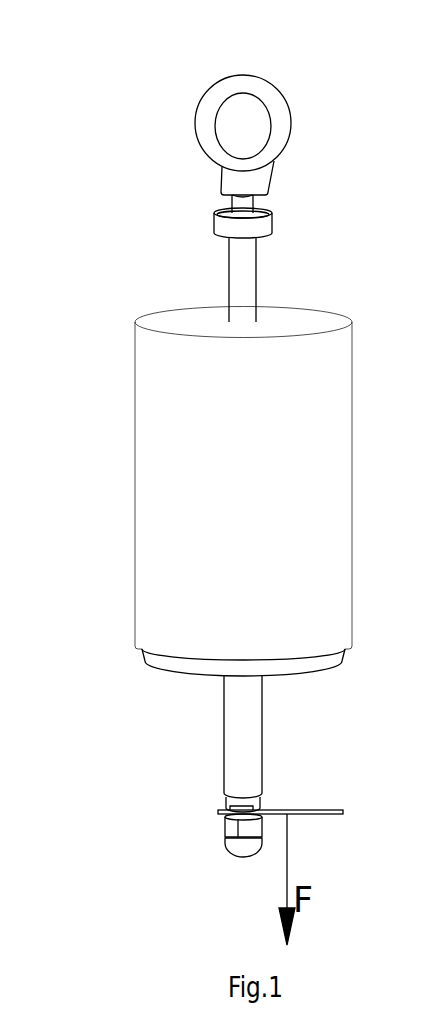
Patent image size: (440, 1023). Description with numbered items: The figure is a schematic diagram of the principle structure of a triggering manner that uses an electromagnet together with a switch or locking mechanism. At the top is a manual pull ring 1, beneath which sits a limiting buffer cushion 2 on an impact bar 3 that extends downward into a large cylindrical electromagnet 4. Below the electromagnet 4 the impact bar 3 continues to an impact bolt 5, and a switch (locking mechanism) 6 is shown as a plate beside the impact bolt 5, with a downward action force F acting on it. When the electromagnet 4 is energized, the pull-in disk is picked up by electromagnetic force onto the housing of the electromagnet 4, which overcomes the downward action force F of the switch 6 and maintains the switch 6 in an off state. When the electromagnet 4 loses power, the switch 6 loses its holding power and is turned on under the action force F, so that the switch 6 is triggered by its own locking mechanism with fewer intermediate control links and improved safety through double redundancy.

The manual pull ring 1 is at (272, 128).
The limiting buffer cushion 2 is at (215, 213).
The impact bar 3 is at (228, 320).
The electromagnet 4 is at (190, 517).
The impact bolt 5 is at (222, 833).
The switch (locking mechanism) 6 is at (305, 814).